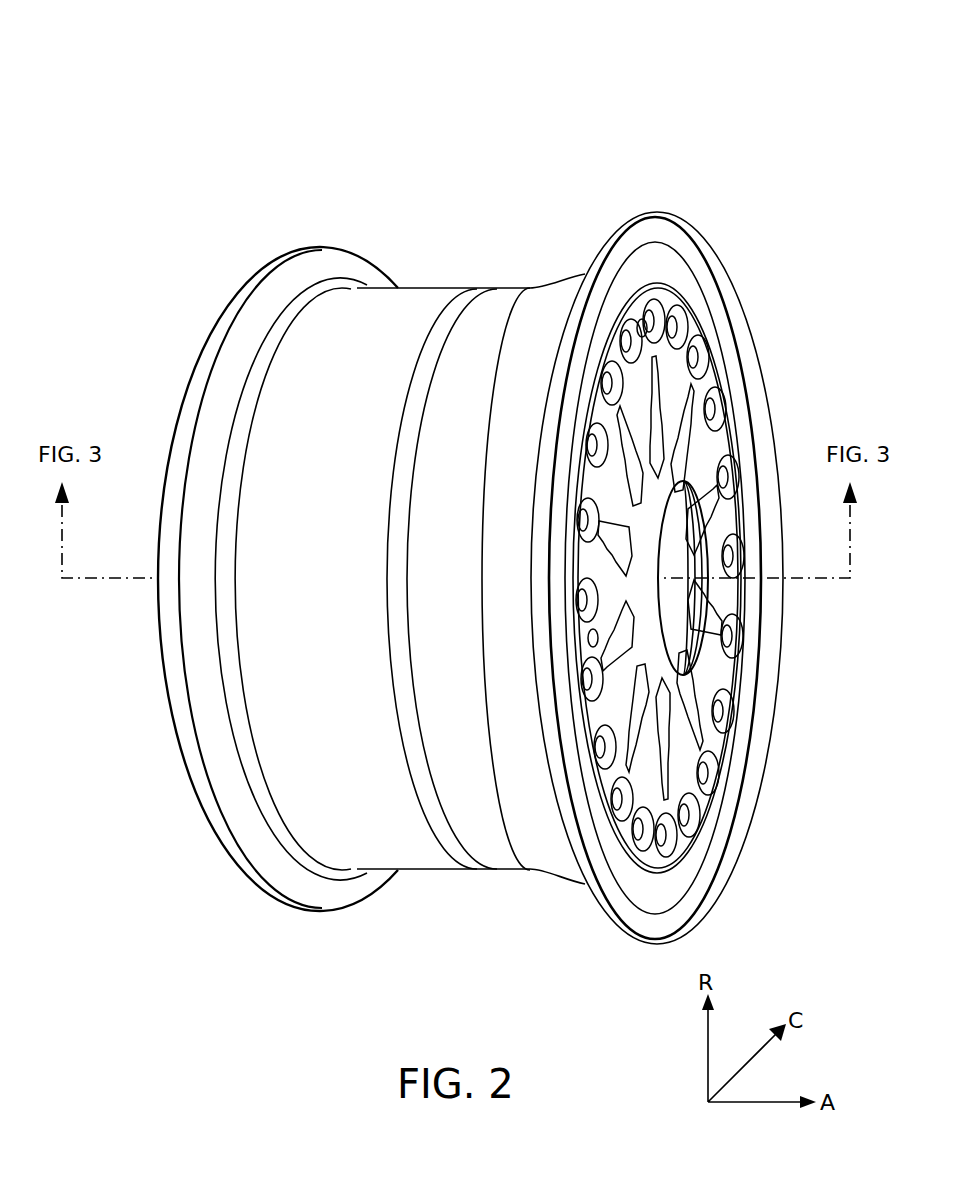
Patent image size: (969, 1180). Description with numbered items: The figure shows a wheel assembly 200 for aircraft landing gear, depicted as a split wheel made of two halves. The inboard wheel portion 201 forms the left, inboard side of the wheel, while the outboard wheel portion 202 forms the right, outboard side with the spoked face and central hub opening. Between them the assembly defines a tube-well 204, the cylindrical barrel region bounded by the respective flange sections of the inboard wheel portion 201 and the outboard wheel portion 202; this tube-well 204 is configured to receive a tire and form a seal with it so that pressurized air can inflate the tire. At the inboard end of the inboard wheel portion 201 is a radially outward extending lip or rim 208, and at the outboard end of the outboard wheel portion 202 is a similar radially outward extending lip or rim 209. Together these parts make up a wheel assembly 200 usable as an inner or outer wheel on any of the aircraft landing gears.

The wheel assembly 200 is at (243, 100).
The inboard wheel portion 201 is at (357, 300).
The outboard wheel portion 202 is at (574, 274).
The tube-well 204 is at (438, 282).
The rim 208 is at (241, 855).
The rim 209 is at (610, 893).